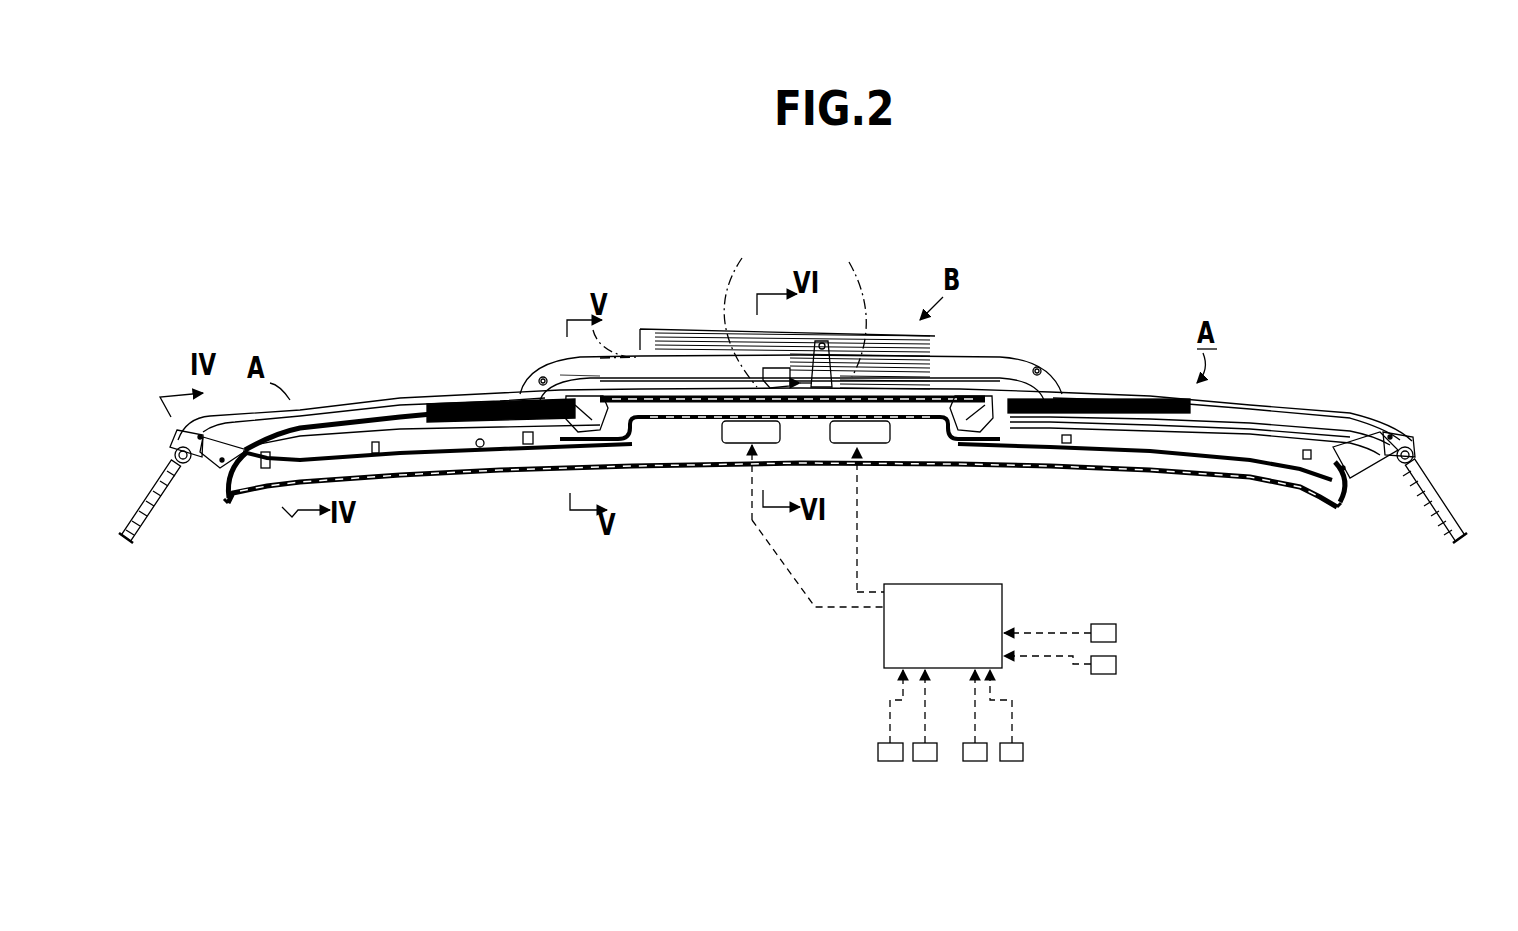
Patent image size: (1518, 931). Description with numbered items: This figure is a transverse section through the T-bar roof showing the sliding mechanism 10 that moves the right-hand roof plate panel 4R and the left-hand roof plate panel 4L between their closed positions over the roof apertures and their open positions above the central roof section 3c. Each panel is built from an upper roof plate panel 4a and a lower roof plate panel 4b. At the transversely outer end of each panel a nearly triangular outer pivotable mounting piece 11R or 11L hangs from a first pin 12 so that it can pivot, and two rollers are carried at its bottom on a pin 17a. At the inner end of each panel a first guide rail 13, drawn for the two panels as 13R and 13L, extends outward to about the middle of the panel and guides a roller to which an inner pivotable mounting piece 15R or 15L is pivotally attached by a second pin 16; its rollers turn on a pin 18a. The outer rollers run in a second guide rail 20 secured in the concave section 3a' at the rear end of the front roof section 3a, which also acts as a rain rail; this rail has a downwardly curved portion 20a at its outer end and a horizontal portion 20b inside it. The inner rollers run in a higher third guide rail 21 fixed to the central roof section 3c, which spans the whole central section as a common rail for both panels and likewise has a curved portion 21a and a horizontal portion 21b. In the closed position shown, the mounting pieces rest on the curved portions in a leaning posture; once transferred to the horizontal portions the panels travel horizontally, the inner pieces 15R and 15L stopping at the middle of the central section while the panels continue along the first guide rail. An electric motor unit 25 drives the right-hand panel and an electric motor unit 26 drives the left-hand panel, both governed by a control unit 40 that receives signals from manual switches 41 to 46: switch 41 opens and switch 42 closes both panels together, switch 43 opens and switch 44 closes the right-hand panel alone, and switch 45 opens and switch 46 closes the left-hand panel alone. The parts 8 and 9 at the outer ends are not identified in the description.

The front roof section 3a is at (817, 482).
The concave section 3a' is at (490, 502).
The central roof section 3c is at (745, 435).
The upper roof plate panel 4a is at (357, 400).
The lower roof plate panel 4b is at (330, 412).
The right-hand roof plate panel 4R is at (396, 393).
The left-hand roof plate panel 4L is at (893, 333).
The right cable 8 is at (140, 507).
The left cable 9 is at (1450, 502).
The sliding mechanism 10 is at (373, 452).
The outer pivotable mounting piece 11R is at (553, 400).
The outer pivotable mounting piece 11L is at (1063, 385).
The first pin 12 is at (180, 437).
The first guide rail 13 is at (790, 350).
The right slider 13R is at (445, 406).
The left slider 13L is at (1117, 401).
The inner pivotable mounting piece 15R is at (560, 500).
The inner pivotable mounting piece 15L is at (1007, 477).
The second pin 16 is at (577, 393).
The pin 17a is at (210, 458).
The pin 18a is at (630, 430).
The second guide rail 20 is at (400, 467).
The curved portion 20a is at (228, 500).
The horizontal portion 20b is at (443, 462).
The third guide rail 21 is at (713, 413).
The curved portion 21a is at (608, 392).
The horizontal portion 21b is at (733, 408).
The electric motor unit 25 is at (782, 434).
The electric motor unit 26 is at (875, 520).
The control unit 40 is at (883, 653).
The manual switch 41 is at (1106, 624).
The manual switch 42 is at (1116, 669).
The manual switch 43 is at (1015, 761).
The manual switch 44 is at (975, 761).
The manual switch 45 is at (925, 761).
The manual switch 46 is at (890, 761).